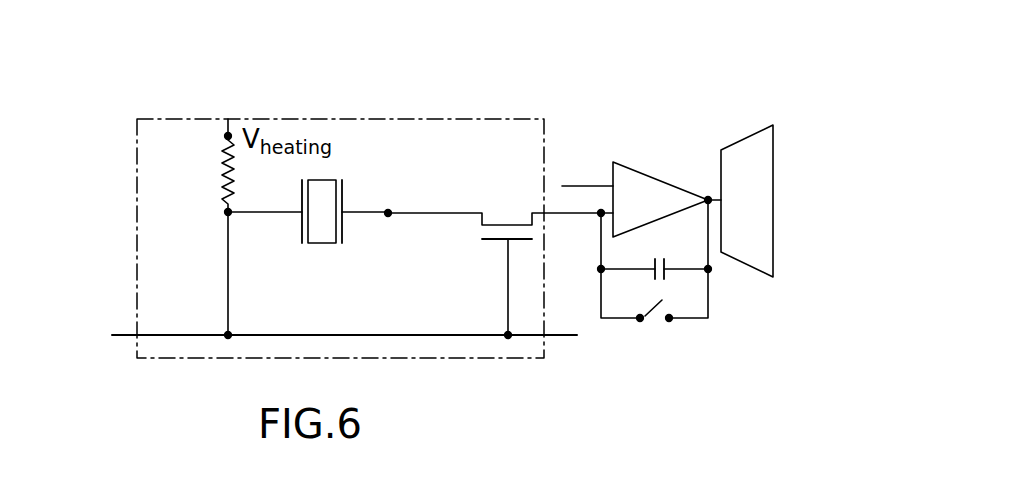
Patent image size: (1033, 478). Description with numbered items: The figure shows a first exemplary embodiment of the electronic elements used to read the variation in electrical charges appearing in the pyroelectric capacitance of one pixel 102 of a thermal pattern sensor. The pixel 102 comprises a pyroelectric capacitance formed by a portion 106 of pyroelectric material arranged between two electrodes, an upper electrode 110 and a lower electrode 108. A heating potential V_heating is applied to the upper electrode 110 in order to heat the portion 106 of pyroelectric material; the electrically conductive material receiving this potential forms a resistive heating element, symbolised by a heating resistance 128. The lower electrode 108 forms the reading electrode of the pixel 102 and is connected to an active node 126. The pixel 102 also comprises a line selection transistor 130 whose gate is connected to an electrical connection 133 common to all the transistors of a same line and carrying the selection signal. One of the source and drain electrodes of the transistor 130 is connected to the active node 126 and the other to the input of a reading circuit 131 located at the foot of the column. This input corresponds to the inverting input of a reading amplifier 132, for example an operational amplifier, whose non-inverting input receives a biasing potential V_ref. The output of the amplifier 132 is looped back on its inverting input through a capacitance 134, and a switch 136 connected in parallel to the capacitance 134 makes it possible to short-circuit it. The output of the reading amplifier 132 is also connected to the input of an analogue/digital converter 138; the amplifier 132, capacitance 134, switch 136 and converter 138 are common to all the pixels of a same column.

The pixel 102 is at (450, 119).
The portion of pyroelectric material 106 is at (320, 244).
The lower electrode 108 is at (343, 195).
The upper electrode 110 is at (302, 235).
The active node 126 is at (390, 216).
The heating resistance 128 is at (224, 160).
The line selection transistor 130 is at (506, 207).
The reading circuit 131 is at (656, 100).
The reading amplifier 132 is at (656, 197).
The electrical connection 133 is at (448, 337).
The capacitance 134 is at (668, 275).
The switch 136 is at (669, 321).
The analogue/digital converter 138 is at (752, 200).